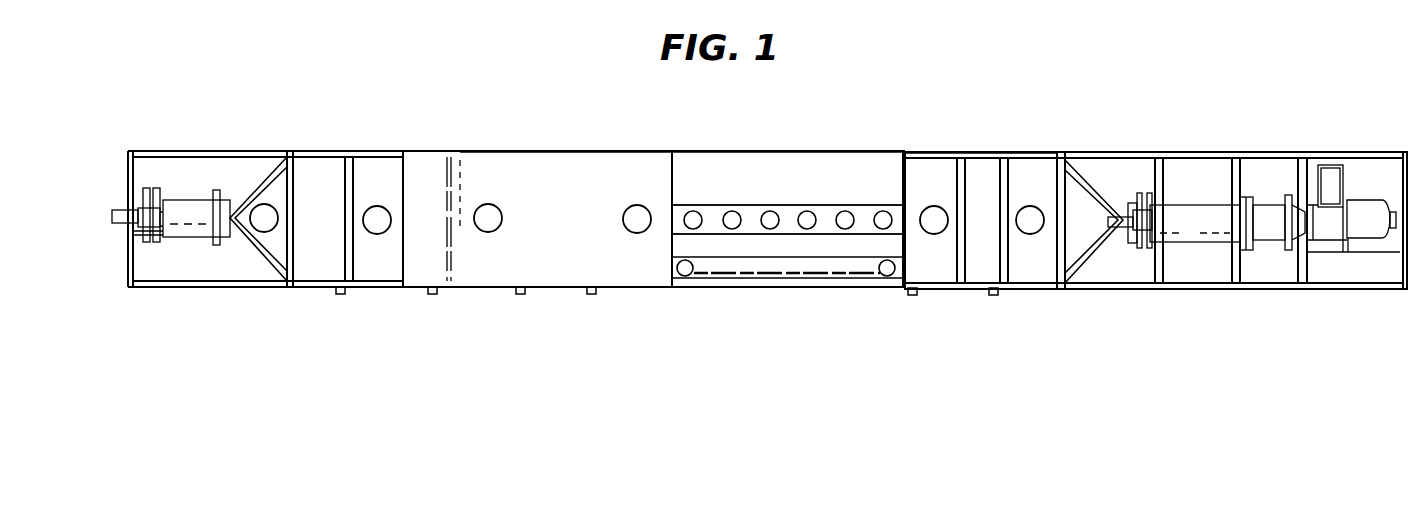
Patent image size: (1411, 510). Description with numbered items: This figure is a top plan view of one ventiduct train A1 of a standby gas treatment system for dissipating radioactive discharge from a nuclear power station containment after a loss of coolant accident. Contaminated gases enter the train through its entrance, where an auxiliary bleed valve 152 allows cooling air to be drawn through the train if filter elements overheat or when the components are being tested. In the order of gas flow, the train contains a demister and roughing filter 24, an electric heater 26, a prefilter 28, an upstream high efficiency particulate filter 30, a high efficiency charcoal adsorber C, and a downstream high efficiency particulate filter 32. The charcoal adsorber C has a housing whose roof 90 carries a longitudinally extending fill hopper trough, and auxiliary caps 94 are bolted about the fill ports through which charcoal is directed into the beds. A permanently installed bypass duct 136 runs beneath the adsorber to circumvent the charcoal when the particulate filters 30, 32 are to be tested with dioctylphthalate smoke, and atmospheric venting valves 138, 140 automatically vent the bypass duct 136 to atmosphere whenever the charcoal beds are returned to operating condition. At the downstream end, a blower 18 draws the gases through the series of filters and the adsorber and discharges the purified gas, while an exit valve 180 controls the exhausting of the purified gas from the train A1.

The demister and roughing filter 24 is at (336, 150).
The electric heater 26 is at (427, 160).
The prefilter 28 is at (557, 108).
The upstream high efficiency particulate filter 30 is at (672, 113).
The downstream high efficiency particulate filter 32 is at (994, 144).
The ventiduct train A1 is at (487, 133).
The high efficiency charcoal adsorber C is at (788, 168).
The roof 90 is at (712, 218).
The auxiliary caps 94 is at (882, 212).
The bypass duct 136 is at (790, 266).
The atmospheric venting valve 138 is at (690, 277).
The atmospheric venting valve 140 is at (889, 277).
The auxiliary bleed valve 152 is at (143, 242).
The exit valve 180 is at (1140, 220).
The blower 18 is at (1334, 232).